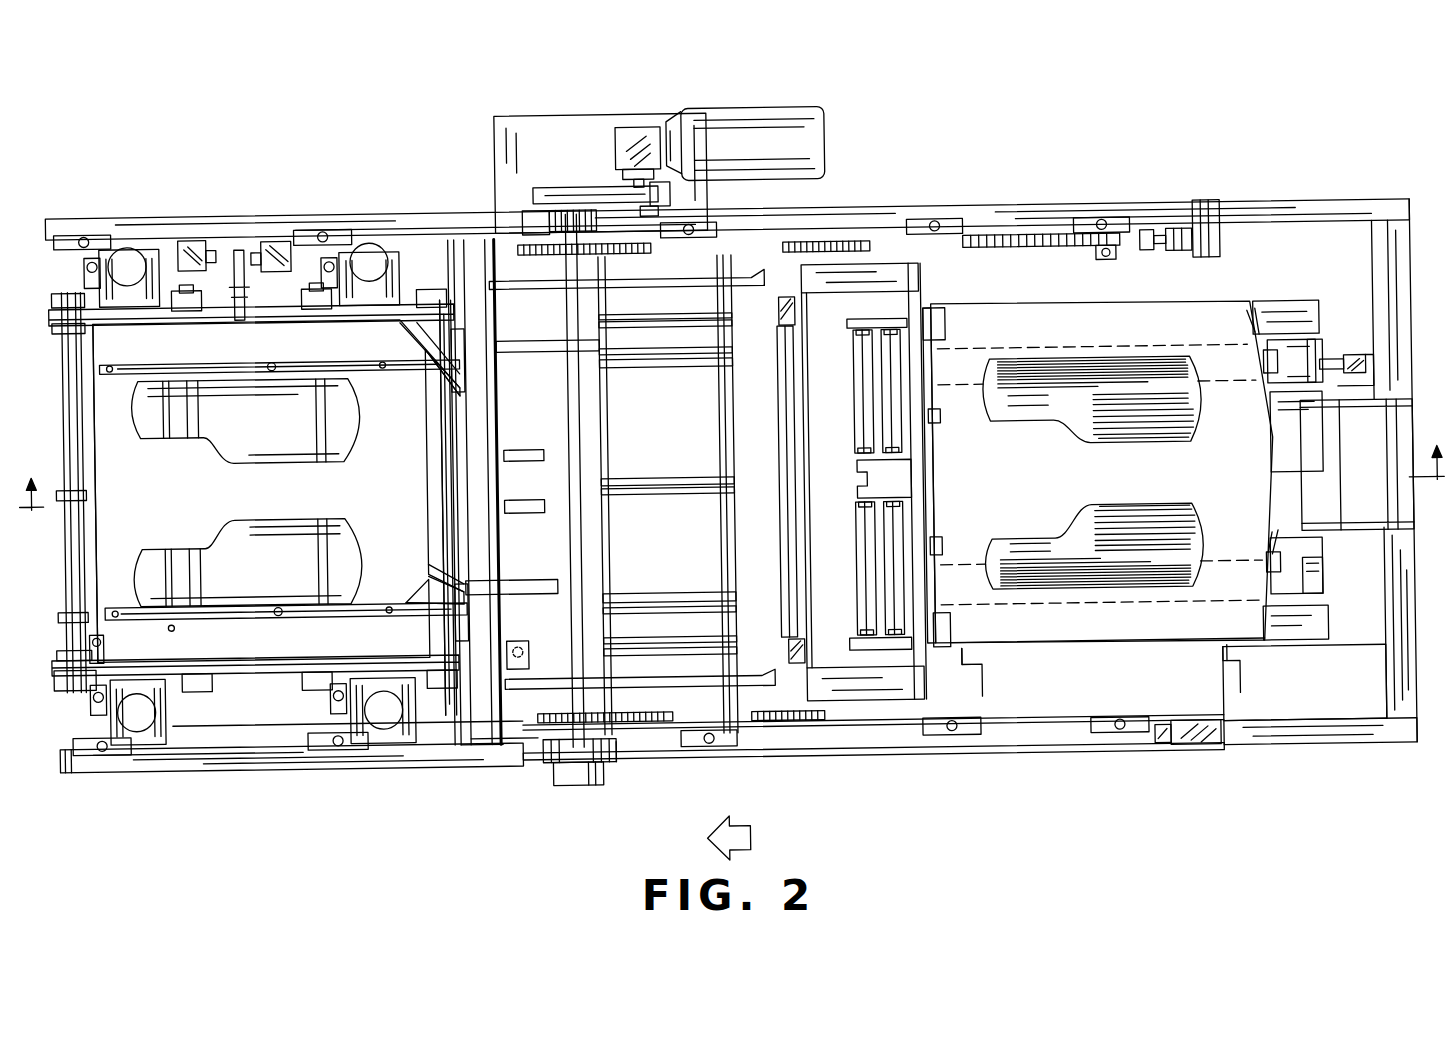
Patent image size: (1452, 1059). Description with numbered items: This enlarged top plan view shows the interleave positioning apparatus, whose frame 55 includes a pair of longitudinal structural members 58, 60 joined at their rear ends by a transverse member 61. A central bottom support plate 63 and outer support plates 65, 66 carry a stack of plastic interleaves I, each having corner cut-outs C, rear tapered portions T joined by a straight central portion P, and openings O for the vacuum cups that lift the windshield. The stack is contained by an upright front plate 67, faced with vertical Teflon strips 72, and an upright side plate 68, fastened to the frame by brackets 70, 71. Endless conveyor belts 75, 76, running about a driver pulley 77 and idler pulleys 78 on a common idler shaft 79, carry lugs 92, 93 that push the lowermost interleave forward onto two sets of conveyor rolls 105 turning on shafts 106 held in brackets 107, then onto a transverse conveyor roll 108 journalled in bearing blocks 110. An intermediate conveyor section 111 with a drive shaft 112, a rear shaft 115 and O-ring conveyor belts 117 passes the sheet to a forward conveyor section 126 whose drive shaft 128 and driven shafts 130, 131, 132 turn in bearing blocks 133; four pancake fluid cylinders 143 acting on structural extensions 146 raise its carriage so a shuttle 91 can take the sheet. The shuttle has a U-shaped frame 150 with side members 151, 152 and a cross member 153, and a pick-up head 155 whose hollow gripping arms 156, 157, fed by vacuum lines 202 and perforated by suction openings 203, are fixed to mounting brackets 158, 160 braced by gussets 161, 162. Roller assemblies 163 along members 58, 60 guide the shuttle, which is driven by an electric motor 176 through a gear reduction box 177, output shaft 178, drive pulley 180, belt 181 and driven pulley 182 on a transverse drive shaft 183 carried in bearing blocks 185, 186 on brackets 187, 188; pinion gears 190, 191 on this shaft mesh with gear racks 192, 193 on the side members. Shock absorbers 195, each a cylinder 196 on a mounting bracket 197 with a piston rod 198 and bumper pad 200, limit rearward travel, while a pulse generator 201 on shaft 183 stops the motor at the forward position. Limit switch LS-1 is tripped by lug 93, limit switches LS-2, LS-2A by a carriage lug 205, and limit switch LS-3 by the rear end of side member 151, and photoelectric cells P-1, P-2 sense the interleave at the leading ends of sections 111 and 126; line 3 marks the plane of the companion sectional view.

The frame 55 is at (1345, 752).
The longitudinal structural member 58 is at (1310, 209).
The longitudinal structural member 60 is at (1290, 752).
The transverse structural member 61 is at (1414, 618).
The bottom support plate 63 is at (1340, 468).
The outer bottom support plate 65 is at (1288, 346).
The outer bottom support plate 66 is at (1280, 657).
The front plate 67 is at (936, 460).
The side plate 68 is at (1132, 654).
The bracket 70 is at (900, 280).
The bracket 71 is at (982, 662).
The Teflon strips 72 is at (942, 418).
The conveyor belt 75 is at (1324, 578).
The conveyor belt 76 is at (1318, 346).
The driver pulley 77 is at (982, 352).
The idler pulleys 78 is at (1306, 400).
The idler shaft 79 is at (1284, 578).
The shuttle 91 is at (468, 765).
The lug 92 is at (1288, 628).
The lug 93 is at (1266, 322).
The conveyor rolls 105 is at (890, 392).
The shafts 106 is at (898, 488).
The brackets 107 is at (870, 326).
The conveyor roll 108 is at (786, 482).
The bearing blocks 110 is at (798, 300).
The intermediate conveyor section 111 is at (738, 402).
The drive shaft 112 is at (612, 556).
The rear shaft 115 is at (728, 440).
The conveyor belts 117 is at (524, 508).
The forward conveyor section 126 is at (456, 430).
The drive shaft 128 is at (318, 536).
The driven shaft 130 is at (66, 525).
The driven shaft 131 is at (192, 540).
The driven shaft 132 is at (440, 458).
The bearing blocks 133 is at (62, 288).
The fluid cylinders 143 is at (127, 245).
The structural extensions 146 is at (138, 262).
The frame 150 is at (480, 760).
The side member 151 is at (506, 745).
The side member 152 is at (503, 246).
The cross member 153 is at (491, 320).
The pick-up head 155 is at (292, 630).
The gripping arm 156 is at (168, 623).
The gripping arm 157 is at (312, 356).
The mounting bracket 158 is at (467, 592).
The mounting bracket 160 is at (466, 356).
The gusset member 161 is at (430, 580).
The gusset member 162 is at (422, 380).
The roller assemblies 163 is at (86, 224).
The electric motor 176 is at (752, 118).
The gear reduction box 177 is at (640, 138).
The output shaft 178 is at (640, 183).
The drive pulley 180 is at (664, 209).
The endless belt 181 is at (618, 188).
The driven pulley 182 is at (576, 190).
The drive shaft 183 is at (583, 417).
The bearing block 185 is at (545, 752).
The bearing block 186 is at (530, 218).
The bracket 187 is at (613, 758).
The bracket 188 is at (545, 210).
The pinion gear 190 is at (550, 710).
The pinion gear 191 is at (542, 253).
The gear rack 192 is at (652, 722).
The gear rack 193 is at (640, 282).
The shock absorbers 195 is at (1165, 238).
The cylinder 196 is at (1183, 258).
The mounting bracket 197 is at (1222, 230).
The piston rod 198 is at (1152, 257).
The bumper pad 200 is at (1112, 266).
The pulse generator 201 is at (568, 778).
The vacuum lines 202 is at (274, 366).
The openings 203 is at (385, 356).
The lug 205 is at (241, 314).
The limit switch LS-1 is at (1357, 364).
The limit switch LS-2 is at (198, 234).
The limit switch LS-2A is at (276, 236).
The limit switch LS-3 is at (1186, 752).
The photoelectric cell P-1 is at (518, 636).
The photoelectric cell P-2 is at (86, 632).
The cut-outs C is at (942, 322).
The tapered portions T is at (1260, 318).
The interleave I is at (78, 455).
The openings O is at (1135, 430).
The straight central portion P is at (1282, 480).
The section line 3 is at (732, 490).